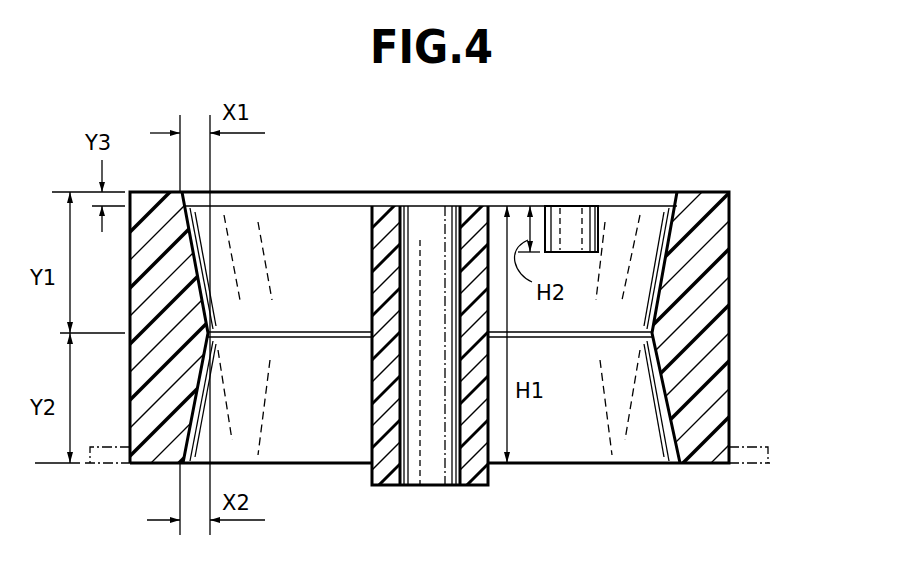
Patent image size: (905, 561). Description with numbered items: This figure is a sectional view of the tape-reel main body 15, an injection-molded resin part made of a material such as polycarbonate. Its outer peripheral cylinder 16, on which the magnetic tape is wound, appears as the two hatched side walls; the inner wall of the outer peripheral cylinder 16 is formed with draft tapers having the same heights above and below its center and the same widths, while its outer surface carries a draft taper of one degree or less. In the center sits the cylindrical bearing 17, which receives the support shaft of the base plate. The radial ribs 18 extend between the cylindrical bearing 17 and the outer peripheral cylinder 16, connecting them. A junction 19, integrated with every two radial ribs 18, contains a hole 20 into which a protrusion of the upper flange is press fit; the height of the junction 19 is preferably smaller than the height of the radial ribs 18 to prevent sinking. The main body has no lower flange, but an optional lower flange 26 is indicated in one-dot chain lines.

The tape-reel main body 15 is at (738, 186).
The outer peripheral cylinder 16 is at (150, 452).
The cylindrical bearing 17 is at (481, 485).
The radial ribs 18 is at (323, 230).
The junctions 19 is at (552, 212).
The hole 20 is at (578, 222).
The lower flange 26 is at (100, 458).